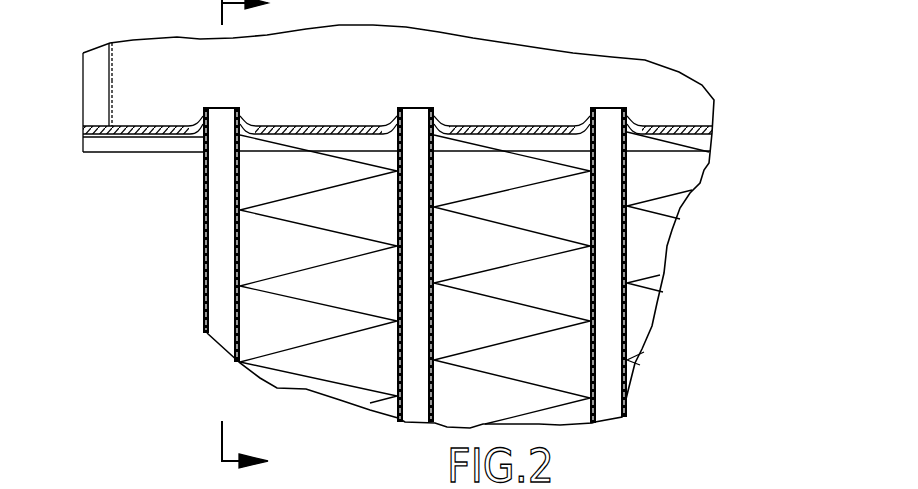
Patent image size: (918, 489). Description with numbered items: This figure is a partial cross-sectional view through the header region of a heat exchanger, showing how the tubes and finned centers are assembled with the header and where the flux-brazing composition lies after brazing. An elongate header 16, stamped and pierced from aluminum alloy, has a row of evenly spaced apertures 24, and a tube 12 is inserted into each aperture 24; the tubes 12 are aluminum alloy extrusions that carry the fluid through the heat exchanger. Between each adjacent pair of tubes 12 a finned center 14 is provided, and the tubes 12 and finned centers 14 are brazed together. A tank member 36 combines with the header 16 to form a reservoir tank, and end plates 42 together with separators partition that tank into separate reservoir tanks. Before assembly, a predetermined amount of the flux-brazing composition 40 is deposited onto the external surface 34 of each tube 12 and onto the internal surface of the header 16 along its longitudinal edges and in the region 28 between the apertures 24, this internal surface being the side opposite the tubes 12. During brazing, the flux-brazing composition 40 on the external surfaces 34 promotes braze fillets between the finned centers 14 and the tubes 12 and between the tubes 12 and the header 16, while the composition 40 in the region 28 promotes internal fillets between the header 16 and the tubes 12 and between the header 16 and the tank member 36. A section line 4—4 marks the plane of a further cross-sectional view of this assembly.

The section line 4- 4 is at (225, 241).
The tube 12 is at (222, 310).
The finned center 14 is at (352, 311).
The header 16 is at (147, 136).
The aperture 24 is at (243, 127).
The region between apertures 28 is at (126, 128).
The external surface 34 is at (203, 229).
The tank member 36 is at (112, 63).
The flux-brazing composition 40 is at (158, 128).
The end plate 42 is at (113, 80).